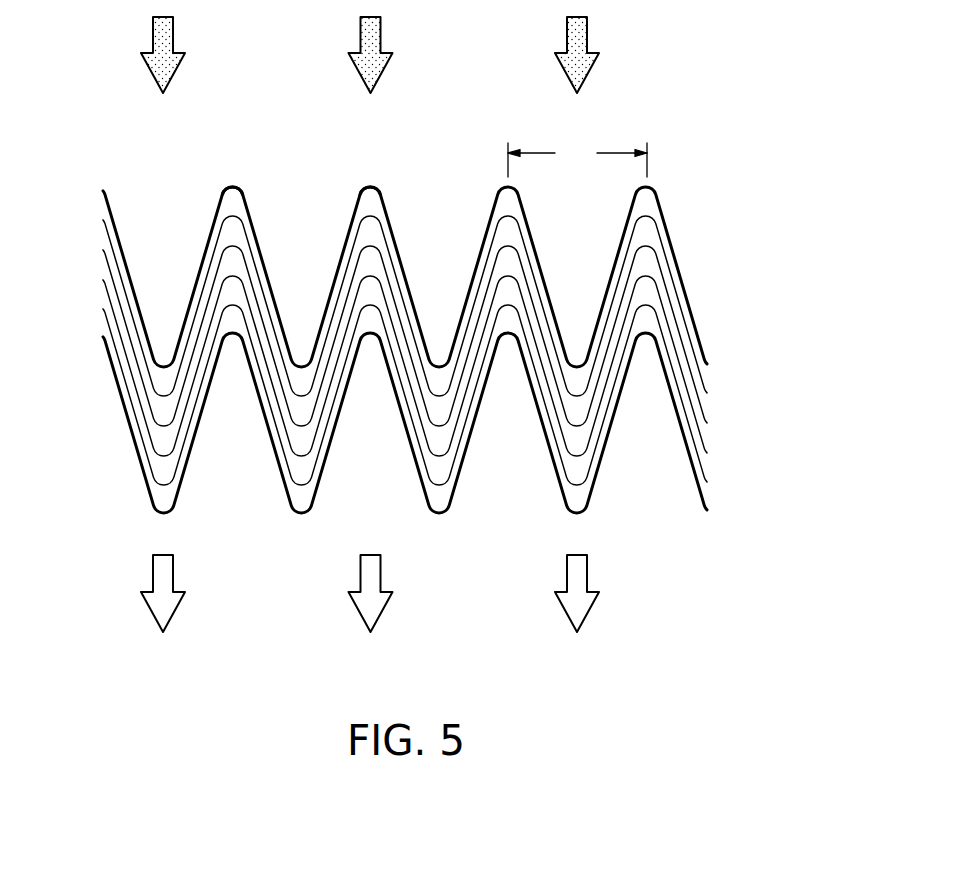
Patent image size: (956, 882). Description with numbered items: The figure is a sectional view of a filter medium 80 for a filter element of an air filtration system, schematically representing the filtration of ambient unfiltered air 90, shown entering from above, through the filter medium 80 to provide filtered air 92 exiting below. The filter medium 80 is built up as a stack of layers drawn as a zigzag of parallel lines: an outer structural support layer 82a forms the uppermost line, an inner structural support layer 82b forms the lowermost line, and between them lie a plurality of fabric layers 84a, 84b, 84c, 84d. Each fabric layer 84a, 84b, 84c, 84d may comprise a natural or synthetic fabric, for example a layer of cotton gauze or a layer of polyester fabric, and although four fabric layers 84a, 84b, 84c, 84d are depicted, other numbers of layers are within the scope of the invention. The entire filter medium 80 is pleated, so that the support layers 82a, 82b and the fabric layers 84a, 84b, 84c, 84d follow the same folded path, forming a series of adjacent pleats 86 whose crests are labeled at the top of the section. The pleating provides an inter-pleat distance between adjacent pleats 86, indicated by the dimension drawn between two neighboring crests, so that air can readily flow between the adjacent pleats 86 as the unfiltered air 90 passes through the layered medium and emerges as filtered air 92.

The filter medium 80 is at (717, 135).
The outer structural support layer 82a is at (684, 274).
The inner structural support layer 82b is at (702, 494).
The fabric layer 84a is at (706, 373).
The fabric layer 84b is at (706, 408).
The fabric layer 84c is at (706, 440).
The fabric layer 84d is at (706, 470).
The pleats 86 is at (231, 185).
The ambient unfiltered air 90 is at (173, 32).
The filtered air 92 is at (173, 571).